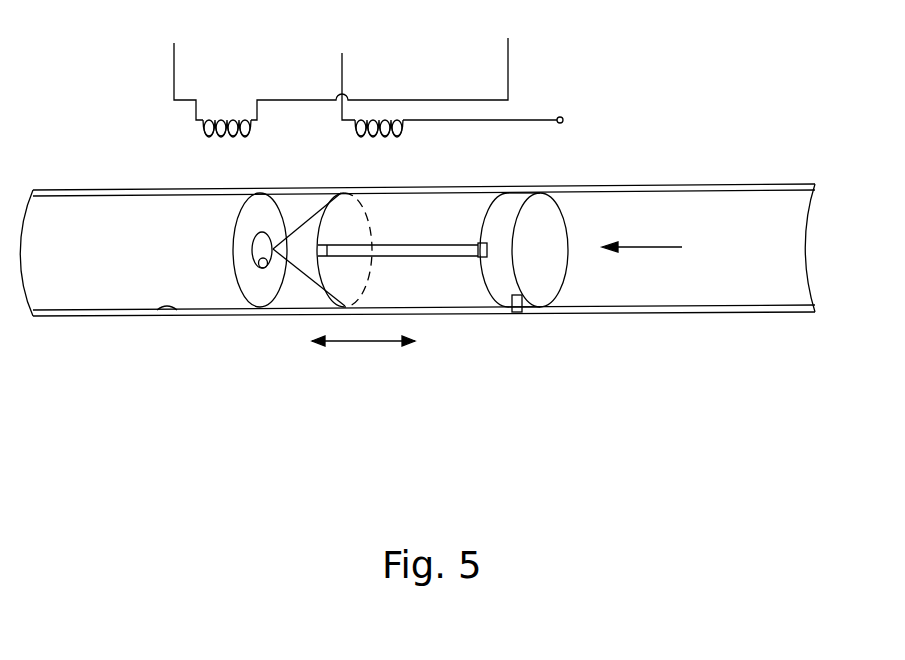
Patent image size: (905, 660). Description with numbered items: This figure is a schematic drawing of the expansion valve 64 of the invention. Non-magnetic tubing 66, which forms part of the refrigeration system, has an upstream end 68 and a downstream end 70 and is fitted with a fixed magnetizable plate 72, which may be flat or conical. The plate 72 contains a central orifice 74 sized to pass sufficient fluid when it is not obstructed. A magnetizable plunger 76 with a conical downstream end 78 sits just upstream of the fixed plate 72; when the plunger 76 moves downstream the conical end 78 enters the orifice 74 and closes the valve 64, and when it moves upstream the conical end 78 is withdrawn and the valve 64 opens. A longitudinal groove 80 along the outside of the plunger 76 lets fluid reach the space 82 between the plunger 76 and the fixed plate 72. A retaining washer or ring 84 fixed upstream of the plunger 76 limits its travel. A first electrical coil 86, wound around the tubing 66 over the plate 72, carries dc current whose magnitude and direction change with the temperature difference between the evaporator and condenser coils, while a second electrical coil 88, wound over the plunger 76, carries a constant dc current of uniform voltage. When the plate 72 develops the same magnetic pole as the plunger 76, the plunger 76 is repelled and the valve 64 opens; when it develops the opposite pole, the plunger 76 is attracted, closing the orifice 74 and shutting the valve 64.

The expansion valve 64 is at (431, 280).
The non-magnetic tubing 66 is at (150, 310).
The upstream end 68 is at (813, 295).
The downstream end 70 is at (26, 302).
The fixed magnetizable plate 72 is at (232, 260).
The central orifice 74 is at (262, 268).
The magnetizable plunger 76 is at (453, 215).
The conical downstream end 78 is at (295, 248).
The longitudinal groove 80 is at (420, 258).
The space 82 is at (297, 297).
The retaining washer or ring 84 is at (518, 313).
The first electrical coil 86 is at (237, 113).
The second electrical coil 88 is at (395, 118).